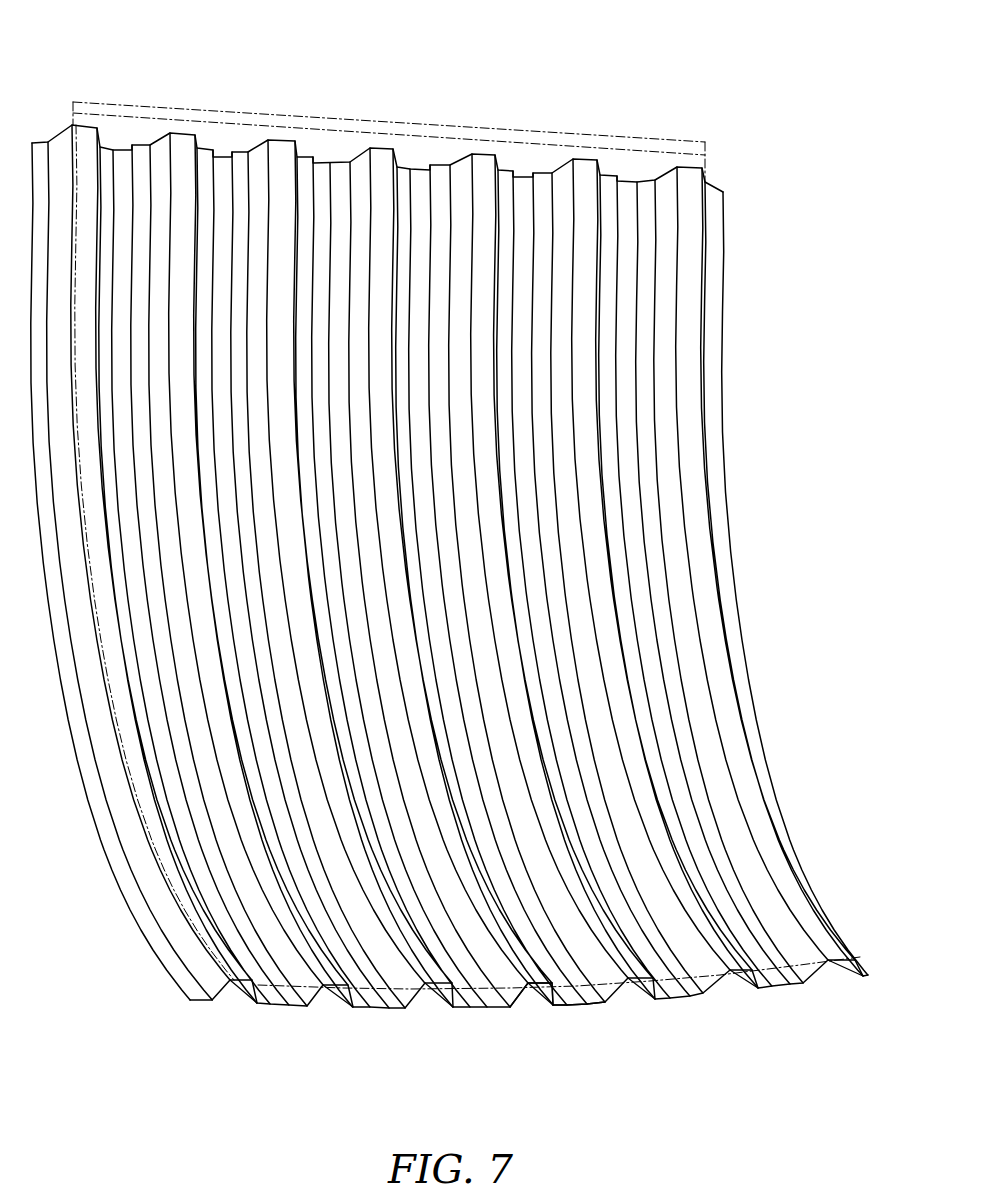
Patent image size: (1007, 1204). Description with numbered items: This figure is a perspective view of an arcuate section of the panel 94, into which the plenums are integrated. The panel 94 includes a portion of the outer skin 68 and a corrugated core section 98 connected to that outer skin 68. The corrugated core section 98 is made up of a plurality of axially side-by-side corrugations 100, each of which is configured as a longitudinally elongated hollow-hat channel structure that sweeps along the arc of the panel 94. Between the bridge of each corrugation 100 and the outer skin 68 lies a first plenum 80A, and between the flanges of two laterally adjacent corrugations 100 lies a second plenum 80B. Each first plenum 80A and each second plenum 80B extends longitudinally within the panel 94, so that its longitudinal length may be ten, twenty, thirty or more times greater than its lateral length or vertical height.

The panel 94 is at (449, 559).
The corrugated core section 98 is at (124, 104).
The outer skin 68 is at (283, 1008).
The corrugation 100 is at (338, 1008).
The first plenum 80A is at (577, 1006).
The second plenum 80B is at (530, 1008).